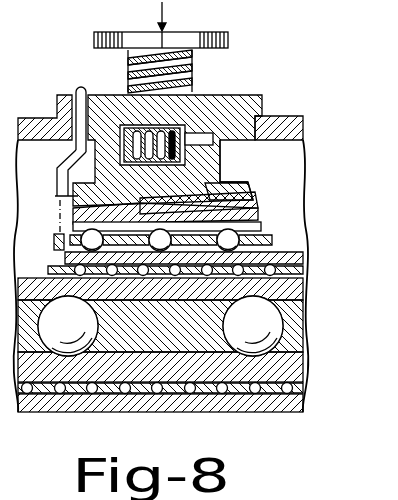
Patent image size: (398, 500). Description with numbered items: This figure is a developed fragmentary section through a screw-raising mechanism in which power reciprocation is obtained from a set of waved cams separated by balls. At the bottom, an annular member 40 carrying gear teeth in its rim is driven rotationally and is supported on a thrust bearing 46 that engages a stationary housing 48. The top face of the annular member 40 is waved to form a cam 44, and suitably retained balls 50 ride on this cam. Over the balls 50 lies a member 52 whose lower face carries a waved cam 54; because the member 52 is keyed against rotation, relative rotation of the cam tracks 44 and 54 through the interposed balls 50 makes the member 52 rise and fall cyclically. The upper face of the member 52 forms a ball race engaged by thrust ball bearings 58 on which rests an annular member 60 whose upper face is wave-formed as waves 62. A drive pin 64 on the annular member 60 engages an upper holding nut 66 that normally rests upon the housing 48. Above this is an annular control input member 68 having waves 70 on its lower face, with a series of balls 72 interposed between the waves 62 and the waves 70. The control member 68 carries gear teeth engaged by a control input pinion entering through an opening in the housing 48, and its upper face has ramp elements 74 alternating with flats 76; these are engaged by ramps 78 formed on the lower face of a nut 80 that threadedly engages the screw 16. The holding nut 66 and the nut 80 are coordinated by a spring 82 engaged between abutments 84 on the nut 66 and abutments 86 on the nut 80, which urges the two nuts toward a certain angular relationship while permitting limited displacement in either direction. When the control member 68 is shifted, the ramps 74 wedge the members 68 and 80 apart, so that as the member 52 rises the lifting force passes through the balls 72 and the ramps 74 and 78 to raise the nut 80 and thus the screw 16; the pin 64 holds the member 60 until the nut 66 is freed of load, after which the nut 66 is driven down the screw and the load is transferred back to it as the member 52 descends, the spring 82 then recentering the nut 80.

The screw 16 is at (192, 72).
The drive pin 64 is at (77, 88).
The holding nut 66 is at (263, 101).
The stationary housing 48 is at (304, 126).
The abutments 84 is at (181, 141).
The spring 82 is at (214, 141).
The abutments 86 is at (221, 156).
The ramps 78 is at (238, 188).
The ramp elements 74 is at (240, 206).
The flats 76 is at (258, 200).
The control input member 68 is at (245, 225).
The waves 70 is at (240, 240).
The waves 62 is at (268, 258).
The annular member 60 is at (304, 270).
The thrust ball bearings 58 is at (56, 268).
The member 52 is at (304, 288).
The waved cam 54 is at (304, 300).
The balls 50 is at (160, 326).
The waved cam 44 is at (300, 356).
The nut 80 is at (72, 190).
The balls 72 is at (54, 243).
The annular member 40 is at (46, 396).
The thrust bearing 46 is at (114, 395).